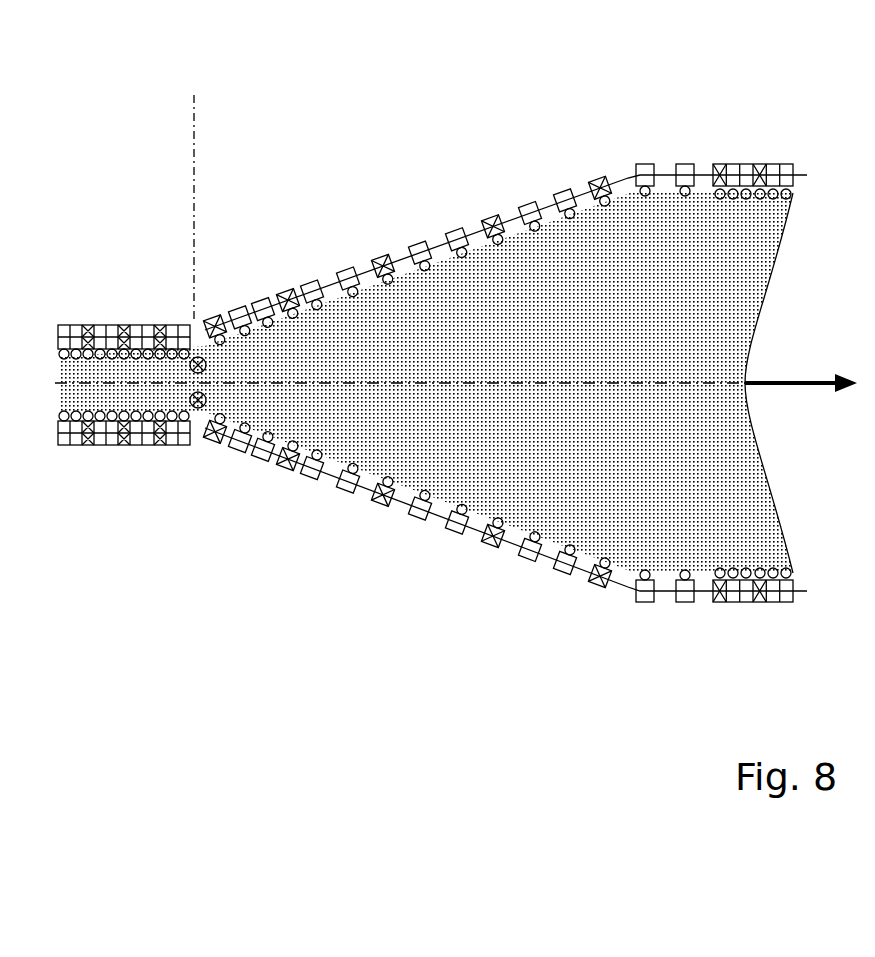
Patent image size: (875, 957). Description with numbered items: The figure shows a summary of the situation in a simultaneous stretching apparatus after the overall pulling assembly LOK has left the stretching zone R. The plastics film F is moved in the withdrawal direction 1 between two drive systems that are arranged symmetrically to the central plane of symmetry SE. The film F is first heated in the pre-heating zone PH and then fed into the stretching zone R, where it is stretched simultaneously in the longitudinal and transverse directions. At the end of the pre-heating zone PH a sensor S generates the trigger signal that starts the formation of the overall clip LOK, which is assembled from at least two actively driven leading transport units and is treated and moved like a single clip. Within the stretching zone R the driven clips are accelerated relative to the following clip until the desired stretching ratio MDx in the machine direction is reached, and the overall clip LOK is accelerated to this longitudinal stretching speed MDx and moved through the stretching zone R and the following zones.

The pre-heating zone PH is at (122, 310).
The stretching zone R is at (505, 316).
The plastics film F is at (426, 383).
The sensor S is at (196, 374).
The central plane of symmetry SE is at (661, 392).
The withdrawal direction 1 is at (818, 396).
The overall clip LOK is at (753, 316).
The stretching ratio in the machine direction MDx is at (519, 118).